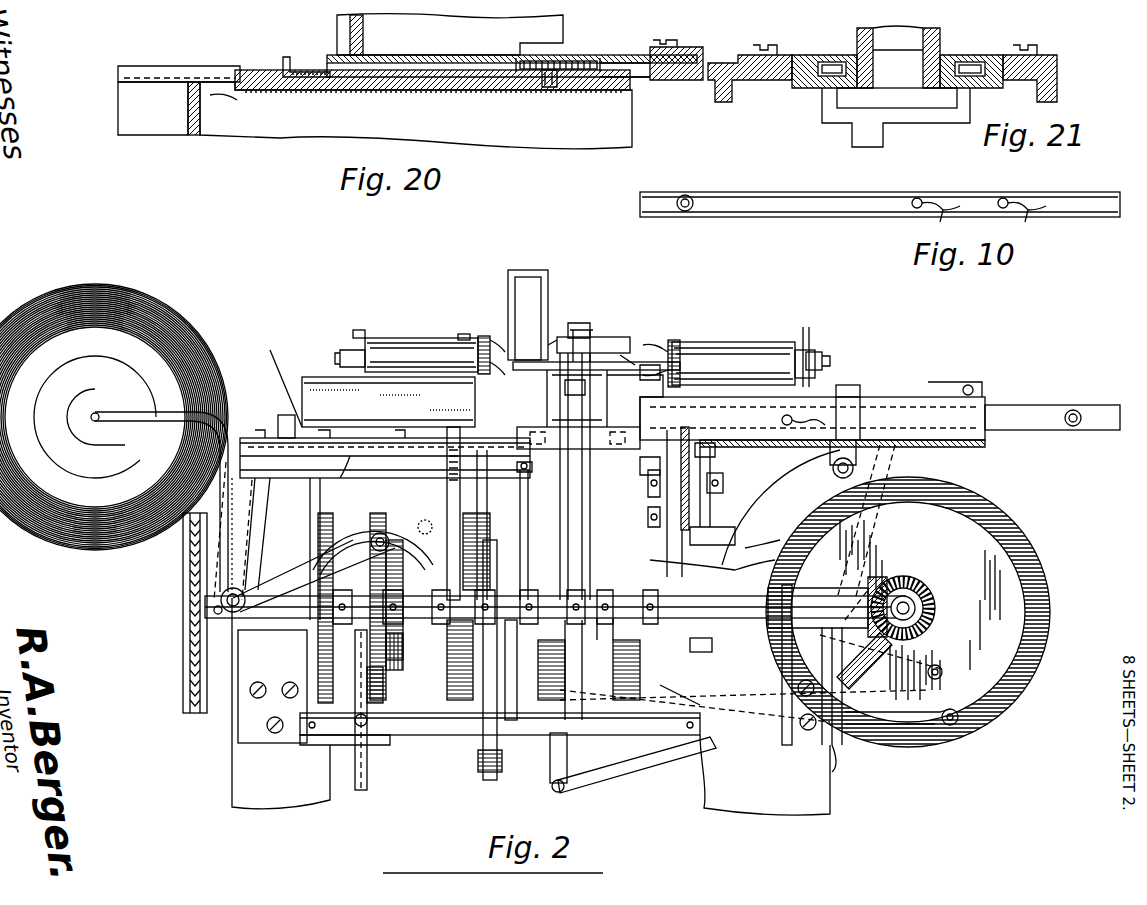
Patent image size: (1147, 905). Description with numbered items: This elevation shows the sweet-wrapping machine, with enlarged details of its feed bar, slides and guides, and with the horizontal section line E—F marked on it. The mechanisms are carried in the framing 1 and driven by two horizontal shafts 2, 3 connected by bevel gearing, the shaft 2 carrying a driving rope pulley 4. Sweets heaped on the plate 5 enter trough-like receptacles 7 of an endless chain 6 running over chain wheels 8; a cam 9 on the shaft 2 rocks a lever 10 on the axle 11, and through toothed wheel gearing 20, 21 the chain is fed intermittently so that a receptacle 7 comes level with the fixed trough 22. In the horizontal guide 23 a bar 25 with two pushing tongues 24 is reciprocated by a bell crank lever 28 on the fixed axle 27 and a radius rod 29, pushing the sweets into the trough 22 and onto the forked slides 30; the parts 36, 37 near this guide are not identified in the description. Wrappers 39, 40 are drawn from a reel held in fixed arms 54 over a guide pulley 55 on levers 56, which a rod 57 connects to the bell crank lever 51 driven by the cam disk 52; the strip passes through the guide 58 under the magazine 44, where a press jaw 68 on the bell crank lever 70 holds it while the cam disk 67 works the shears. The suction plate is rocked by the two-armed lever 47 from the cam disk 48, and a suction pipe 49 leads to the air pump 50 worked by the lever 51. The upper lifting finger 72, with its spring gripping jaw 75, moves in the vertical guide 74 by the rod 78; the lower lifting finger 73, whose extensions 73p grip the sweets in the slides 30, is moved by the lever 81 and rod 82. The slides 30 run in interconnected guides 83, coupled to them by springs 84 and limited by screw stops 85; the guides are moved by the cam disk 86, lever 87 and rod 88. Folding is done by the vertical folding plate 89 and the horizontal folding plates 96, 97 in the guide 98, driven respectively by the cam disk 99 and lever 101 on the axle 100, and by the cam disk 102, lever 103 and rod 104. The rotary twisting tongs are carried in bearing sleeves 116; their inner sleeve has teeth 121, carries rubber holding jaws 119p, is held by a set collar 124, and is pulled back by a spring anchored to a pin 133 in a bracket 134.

In FIG. 20, the machine framing 1 is at (172, 72).
In FIG. 21, the machine framing 1 is at (762, 82).
In FIG. 2, the horizontal shaft 2 is at (555, 613).
In FIG. 2, the horizontal shaft 3 is at (920, 615).
In FIG. 2, the driving rope pulley 4 is at (183, 628).
In FIG. 2, the plate 5 is at (114, 417).
In FIG. 2, the horizontal endless chain 6 is at (735, 510).
In FIG. 2, the trough-like receptacles 7 is at (806, 330).
In FIG. 2, the chain wheels 8 is at (724, 468).
In FIG. 2, the cam 9 is at (660, 660).
In FIG. 2, the lever 10 is at (625, 735).
In FIG. 2, the axle 11 is at (322, 745).
In FIG. 2, the toothed wheel gearing 20 is at (790, 600).
In FIG. 2, the toothed wheel gearing 21 is at (800, 570).
In FIG. 20, the interrupted fixed trough 22 is at (292, 60).
In FIG. 2, the horizontal guide 23 is at (880, 400).
In FIG. 10, the pushing tongues 24 is at (936, 205).
In FIG. 2, the pushing tongues 24 is at (760, 415).
In FIG. 10, the bar 25 is at (842, 200).
In FIG. 2, the bar 25 is at (1098, 430).
In FIG. 2, the fixed axle 27 is at (835, 770).
In FIG. 2, the bell crank lever 28 is at (897, 560).
In FIG. 10, the radius rod 29 is at (683, 196).
In FIG. 2, the radius rod 29 is at (1068, 425).
In FIG. 20, the slides 30 is at (312, 92).
In FIG. 21, the slides 30 is at (832, 60).
In FIG. 2, the slides 30 is at (612, 437).
In FIG. 2, the clamp 36 is at (840, 388).
In FIG. 2, the roller 37 is at (835, 468).
In FIG. 2, the wrappers 39 is at (265, 530).
In FIG. 2, the wrappers 40 is at (351, 466).
In FIG. 2, the magazine 44 is at (388, 402).
In FIG. 2, the two-armed lever 47 is at (450, 438).
In FIG. 2, the cam disk 48 is at (440, 760).
In FIG. 2, the suction pipe 49 is at (380, 500).
In FIG. 2, the air pump 50 is at (403, 648).
In FIG. 2, the bell crank lever 51 is at (367, 688).
In FIG. 2, the side groove cam disk 52 is at (392, 585).
In FIG. 2, the fixed arms 54 is at (175, 420).
In FIG. 2, the guide pulley 55 is at (245, 595).
In FIG. 2, the levers 56 is at (350, 560).
In FIG. 2, the rod 57 is at (388, 562).
In FIG. 2, the guide 58 is at (340, 420).
In FIG. 2, the cam disk 67 is at (485, 755).
In FIG. 2, the press jaw 68 is at (284, 414).
In FIG. 2, the bell crank lever 70 is at (722, 775).
In FIG. 2, the upper lifting finger 72 is at (508, 300).
In FIG. 20, the lower lifting finger 73 is at (186, 120).
In FIG. 21, the lower lifting finger 73 is at (884, 140).
In FIG. 2, the lower lifting finger 73 is at (756, 714).
In FIG. 20, the upwardly directed extensions 73p is at (232, 107).
In FIG. 21, the upwardly directed extensions 73p is at (955, 98).
In FIG. 2, the vertical guide 74 is at (440, 478).
In FIG. 2, the spring gripping jaw 75 is at (605, 338).
In FIG. 2, the rod 78 is at (530, 488).
In FIG. 2, the lever 81 is at (640, 770).
In FIG. 2, the rod 82 is at (567, 760).
In FIG. 20, the horizontal guides 83 is at (645, 55).
In FIG. 21, the horizontal guides 83 is at (990, 55).
In FIG. 2, the horizontal guides 83 is at (615, 430).
In FIG. 20, the springs 84 is at (575, 58).
In FIG. 20, the screw stops 85 is at (548, 88).
In FIG. 2, the cam disk 86 is at (568, 640).
In FIG. 2, the lever 87 is at (582, 690).
In FIG. 2, the rod 88 is at (635, 400).
In FIG. 2, the folding plate 89 is at (655, 344).
In FIG. 2, the folding plate 96 is at (648, 365).
In FIG. 2, the folding plate 97 is at (612, 355).
In FIG. 20, the horizontal guide 98 is at (450, 34).
In FIG. 21, the horizontal guide 98 is at (898, 57).
In FIG. 2, the horizontal guide 98 is at (550, 345).
In FIG. 2, the cam disk 99 is at (540, 720).
In FIG. 2, the axle 100 is at (599, 602).
In FIG. 2, the two-armed lever 101 is at (560, 395).
In FIG. 2, the cam disk 102 is at (712, 572).
In FIG. 2, the two-armed lever 103 is at (612, 458).
In FIG. 2, the rod 104 is at (580, 325).
In FIG. 2, the bearing sleeves 116 is at (412, 350).
In FIG. 2, the rubber holding jaws 119p is at (530, 345).
In FIG. 2, the teeth 121 is at (495, 345).
In FIG. 2, the set collar 124 is at (360, 330).
In FIG. 2, the pin 133 is at (335, 358).
In FIG. 2, the bracket 134 is at (356, 336).
In FIG. 2, the section line E— F is at (1018, 490).